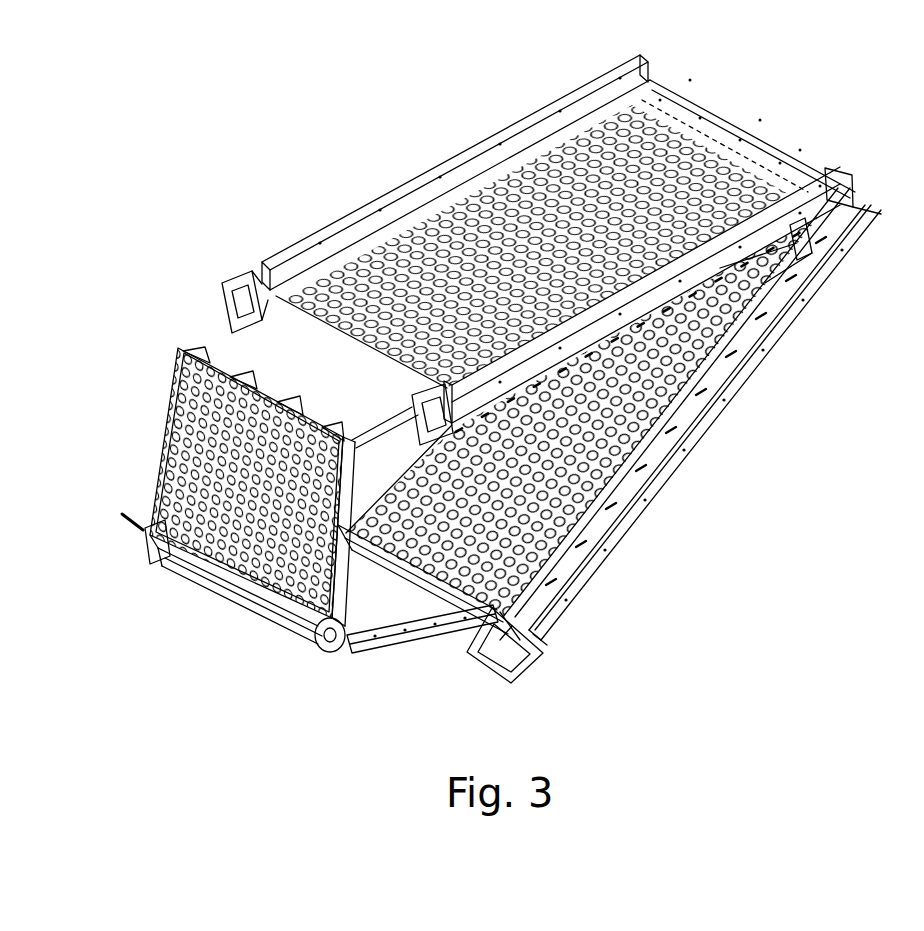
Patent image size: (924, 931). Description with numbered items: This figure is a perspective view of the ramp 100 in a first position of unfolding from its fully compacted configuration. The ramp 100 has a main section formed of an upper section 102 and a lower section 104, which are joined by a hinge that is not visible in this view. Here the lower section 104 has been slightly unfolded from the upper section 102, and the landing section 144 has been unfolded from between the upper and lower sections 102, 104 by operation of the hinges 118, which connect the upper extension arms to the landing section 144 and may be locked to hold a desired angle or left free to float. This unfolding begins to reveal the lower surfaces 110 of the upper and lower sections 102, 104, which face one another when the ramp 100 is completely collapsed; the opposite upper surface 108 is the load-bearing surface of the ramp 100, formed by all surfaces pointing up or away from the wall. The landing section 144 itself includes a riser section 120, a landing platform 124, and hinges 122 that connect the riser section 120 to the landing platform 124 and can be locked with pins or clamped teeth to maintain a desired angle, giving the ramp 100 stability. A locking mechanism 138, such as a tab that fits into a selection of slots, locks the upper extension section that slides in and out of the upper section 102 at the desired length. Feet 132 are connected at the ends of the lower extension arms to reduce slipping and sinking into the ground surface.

The ramp 100 is at (886, 640).
The upper section 102 is at (820, 275).
The lower section 104 is at (347, 213).
The upper surface 108 is at (730, 140).
The lower surface 110 is at (575, 493).
The hinges 118 is at (507, 648).
The riser section 120 is at (405, 648).
The hinges 122 is at (146, 520).
The landing platform 124 is at (190, 408).
The feet 132 is at (228, 290).
The locking mechanism 138 is at (688, 420).
The landing section 144 is at (215, 656).